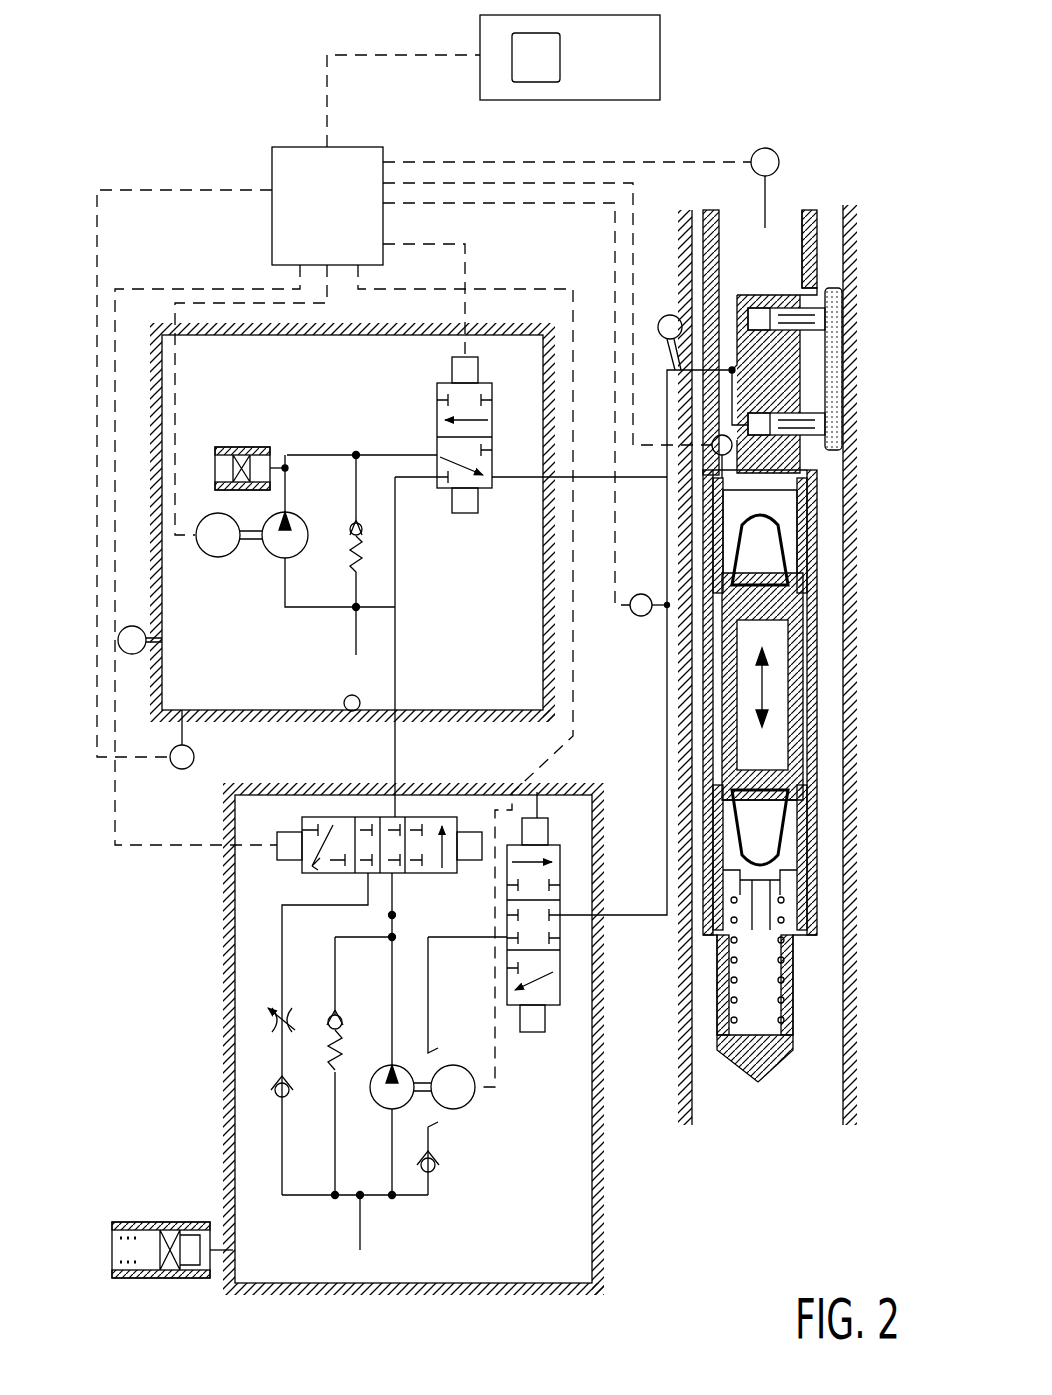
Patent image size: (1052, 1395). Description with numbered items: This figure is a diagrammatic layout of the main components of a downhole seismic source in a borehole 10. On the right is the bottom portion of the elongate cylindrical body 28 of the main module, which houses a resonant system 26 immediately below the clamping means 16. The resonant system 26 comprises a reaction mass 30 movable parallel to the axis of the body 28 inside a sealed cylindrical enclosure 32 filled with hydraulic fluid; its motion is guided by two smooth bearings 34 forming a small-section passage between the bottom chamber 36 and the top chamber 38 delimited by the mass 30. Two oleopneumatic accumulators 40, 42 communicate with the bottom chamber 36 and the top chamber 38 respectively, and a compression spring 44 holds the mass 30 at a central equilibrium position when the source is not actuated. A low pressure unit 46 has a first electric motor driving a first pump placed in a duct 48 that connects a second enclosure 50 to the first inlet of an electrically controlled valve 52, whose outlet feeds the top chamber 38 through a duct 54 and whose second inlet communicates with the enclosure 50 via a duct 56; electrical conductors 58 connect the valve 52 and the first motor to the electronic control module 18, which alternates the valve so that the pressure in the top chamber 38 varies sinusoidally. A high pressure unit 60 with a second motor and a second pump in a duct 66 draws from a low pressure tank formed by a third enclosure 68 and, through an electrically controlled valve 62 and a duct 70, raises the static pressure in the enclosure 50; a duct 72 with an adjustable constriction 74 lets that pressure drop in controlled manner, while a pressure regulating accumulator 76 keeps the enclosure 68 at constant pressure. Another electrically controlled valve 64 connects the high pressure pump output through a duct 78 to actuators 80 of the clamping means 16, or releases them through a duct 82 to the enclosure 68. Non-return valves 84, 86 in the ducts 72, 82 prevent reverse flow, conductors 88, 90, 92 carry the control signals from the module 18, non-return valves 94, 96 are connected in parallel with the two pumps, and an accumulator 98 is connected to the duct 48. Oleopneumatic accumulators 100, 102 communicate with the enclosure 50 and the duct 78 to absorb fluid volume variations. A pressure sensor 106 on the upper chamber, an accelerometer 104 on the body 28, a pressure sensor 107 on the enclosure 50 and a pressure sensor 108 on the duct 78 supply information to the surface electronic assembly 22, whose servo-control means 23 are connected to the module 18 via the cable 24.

The borehole 10 is at (843, 215).
The clamping means 16 is at (845, 352).
The electronic control module 18 is at (280, 140).
The electronic assembly 22 is at (640, 46).
The servo-control means 23 is at (512, 50).
The cable 24 is at (327, 60).
The resonant system 26 is at (830, 655).
The elongate cylindrical body 28 is at (820, 248).
The reaction mass 30 is at (790, 710).
The sealed cylindrical enclosure 32 is at (805, 775).
The smooth bearings 34 is at (810, 625).
The bottom chamber 36 is at (775, 1020).
The top chamber 38 is at (800, 480).
The oleopneumatic accumulator 40 is at (800, 868).
The oleopneumatic accumulator 42 is at (800, 512).
The compression spring 44 is at (790, 962).
The low pressure unit 46 is at (240, 575).
The duct 48 is at (420, 455).
The second enclosure 50 is at (352, 711).
The electrically controlled valve 52 is at (438, 500).
The duct 54 is at (520, 480).
The duct 56 is at (465, 244).
The electrical conductors 58 is at (228, 300).
The high pressure unit 60 is at (470, 1110).
The electrically controlled valve 62 is at (290, 872).
The electrically controlled valve 64 is at (552, 1035).
The duct 66 is at (392, 1030).
The third enclosure 68 is at (597, 1160).
The duct 70 is at (405, 740).
The duct 72 is at (282, 935).
The constriction 74 is at (282, 1025).
The pressure regulating accumulator 76 is at (165, 1280).
The duct 78 is at (667, 760).
The actuators 80 is at (752, 408).
The duct 82 is at (428, 950).
The non-return valve 84 is at (276, 1096).
The non-return valve 86 is at (434, 1170).
The conductor 88 is at (137, 289).
The conductor 90 is at (515, 218).
The conductor 92 is at (502, 289).
The non-return valve 94 is at (350, 528).
The non-return valve 96 is at (335, 1010).
The accumulator 98 is at (230, 445).
The oleopneumatic accumulator 100 is at (162, 660).
The oleopneumatic accumulator 102 is at (665, 316).
The accelerometer 104 is at (765, 148).
The pressure sensor 106 is at (722, 435).
The pressure sensor 107 is at (194, 769).
The pressure sensor 108 is at (640, 618).